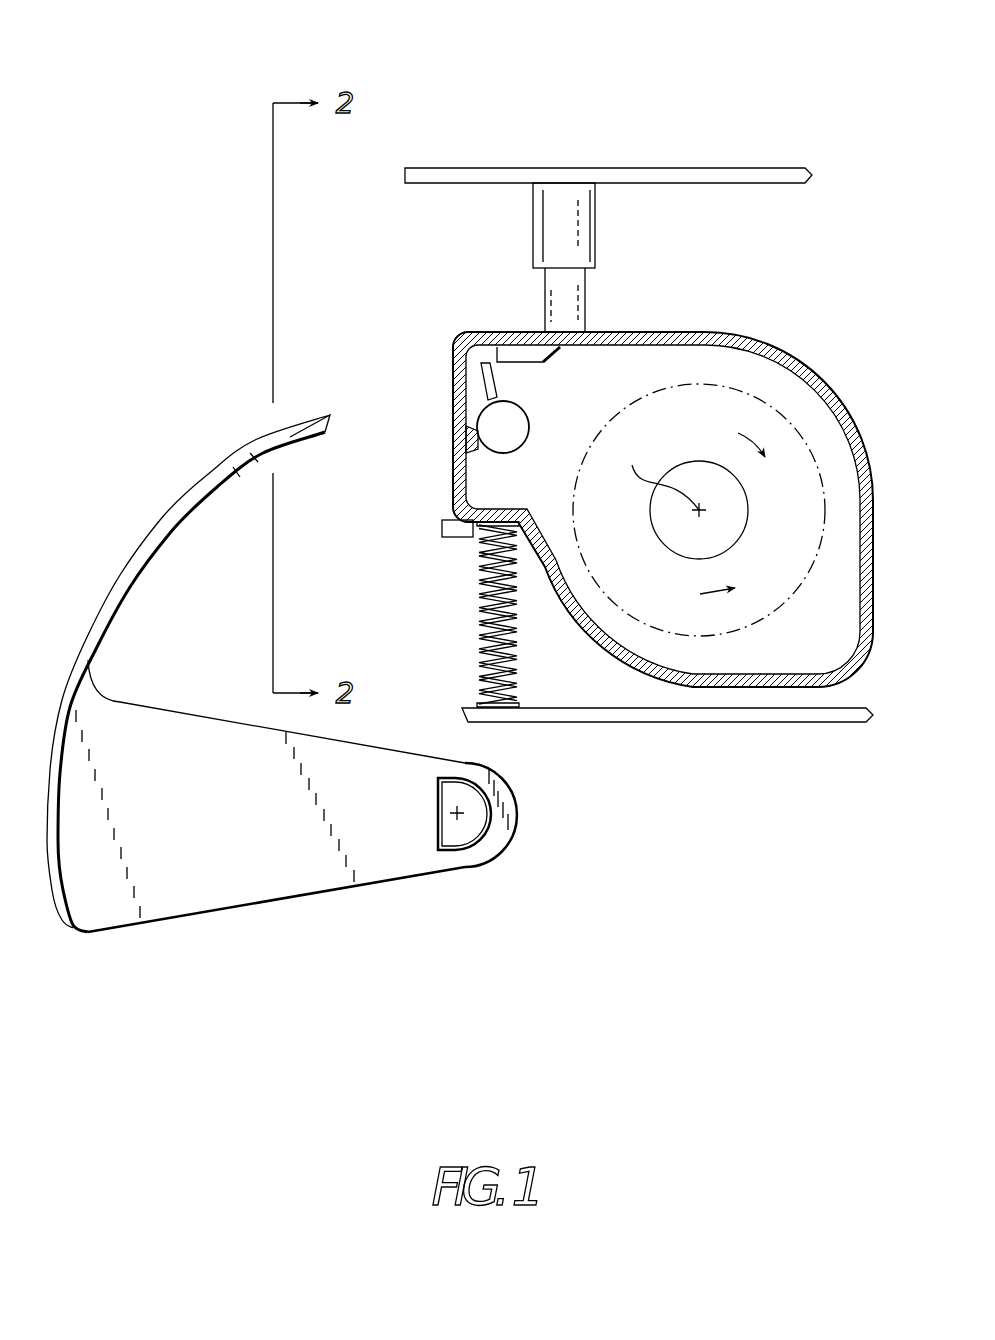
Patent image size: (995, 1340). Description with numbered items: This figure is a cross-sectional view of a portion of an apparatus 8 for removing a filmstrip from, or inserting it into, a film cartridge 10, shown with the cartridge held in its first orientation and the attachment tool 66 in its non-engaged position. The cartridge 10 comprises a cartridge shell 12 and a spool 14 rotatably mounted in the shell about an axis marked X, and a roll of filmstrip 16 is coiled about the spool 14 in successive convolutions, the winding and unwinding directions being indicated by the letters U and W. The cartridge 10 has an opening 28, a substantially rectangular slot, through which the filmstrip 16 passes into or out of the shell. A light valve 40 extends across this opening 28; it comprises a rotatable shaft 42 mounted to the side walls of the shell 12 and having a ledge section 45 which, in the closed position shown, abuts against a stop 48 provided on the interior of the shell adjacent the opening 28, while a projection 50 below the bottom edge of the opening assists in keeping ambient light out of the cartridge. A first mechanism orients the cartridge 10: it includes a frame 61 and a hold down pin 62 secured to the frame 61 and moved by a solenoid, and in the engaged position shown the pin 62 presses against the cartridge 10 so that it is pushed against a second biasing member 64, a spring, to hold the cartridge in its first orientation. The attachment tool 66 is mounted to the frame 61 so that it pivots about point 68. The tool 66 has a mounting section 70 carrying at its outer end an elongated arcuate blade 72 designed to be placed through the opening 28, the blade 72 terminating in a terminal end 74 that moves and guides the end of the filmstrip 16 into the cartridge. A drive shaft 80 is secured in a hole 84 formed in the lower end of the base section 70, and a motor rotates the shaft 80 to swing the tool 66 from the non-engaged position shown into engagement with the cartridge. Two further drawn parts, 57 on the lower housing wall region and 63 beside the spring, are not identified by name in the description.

The apparatus 8 is at (530, 104).
The film cartridge 10 is at (680, 522).
The cartridge shell 12 is at (877, 533).
The spool 14 is at (660, 542).
The filmstrip 16 is at (708, 383).
The opening 28 is at (455, 372).
The light valve 40 is at (514, 388).
The rotatable shaft 42 is at (466, 416).
The ledge section 45 is at (483, 383).
The stop 48 is at (518, 353).
The projection 50 is at (468, 455).
The housing bottom wall 57 is at (667, 690).
The frame 61 is at (700, 168).
The hold down pin 62 is at (596, 228).
The stop block 63 is at (440, 528).
The second biasing member 64 is at (478, 616).
The attachment tool 66 is at (284, 711).
The pivot point 68 is at (478, 862).
The mounting section 70 is at (270, 796).
The arcuate blade 72 is at (188, 673).
The terminal end 74 is at (325, 432).
The drive shaft 80 is at (449, 874).
The hole 84 is at (448, 852).